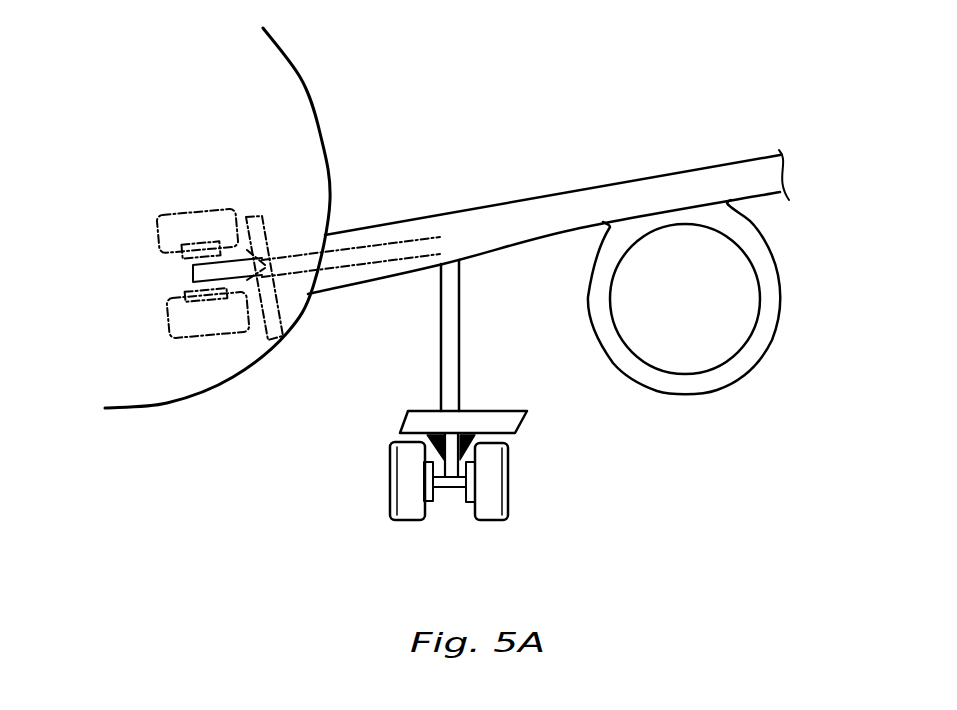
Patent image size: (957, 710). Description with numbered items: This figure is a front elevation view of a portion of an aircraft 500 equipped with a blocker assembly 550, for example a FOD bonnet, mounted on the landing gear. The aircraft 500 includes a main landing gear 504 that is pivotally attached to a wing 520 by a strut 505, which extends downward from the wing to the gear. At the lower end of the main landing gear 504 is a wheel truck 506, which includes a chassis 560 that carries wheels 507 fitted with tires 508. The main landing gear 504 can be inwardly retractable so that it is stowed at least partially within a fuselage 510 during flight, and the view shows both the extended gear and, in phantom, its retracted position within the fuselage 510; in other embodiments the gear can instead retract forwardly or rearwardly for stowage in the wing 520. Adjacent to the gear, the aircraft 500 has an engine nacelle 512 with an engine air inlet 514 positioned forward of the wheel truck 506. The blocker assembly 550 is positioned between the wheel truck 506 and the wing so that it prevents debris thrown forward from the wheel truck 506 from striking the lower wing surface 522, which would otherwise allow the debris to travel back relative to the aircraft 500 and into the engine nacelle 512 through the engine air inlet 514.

The aircraft 500 is at (352, 68).
The main landing gear 504 is at (431, 428).
The strut 505 is at (440, 310).
The wheel truck 506 is at (431, 514).
The wheels 507 is at (468, 503).
The tires 508 is at (392, 476).
The fuselage 510 is at (140, 412).
The engine nacelle 512 is at (712, 392).
The engine air inlet 514 is at (658, 374).
The wing 520 is at (520, 200).
The lower wing surface 522 is at (766, 196).
The blocker assembly 550 is at (404, 423).
The chassis 560 is at (443, 505).